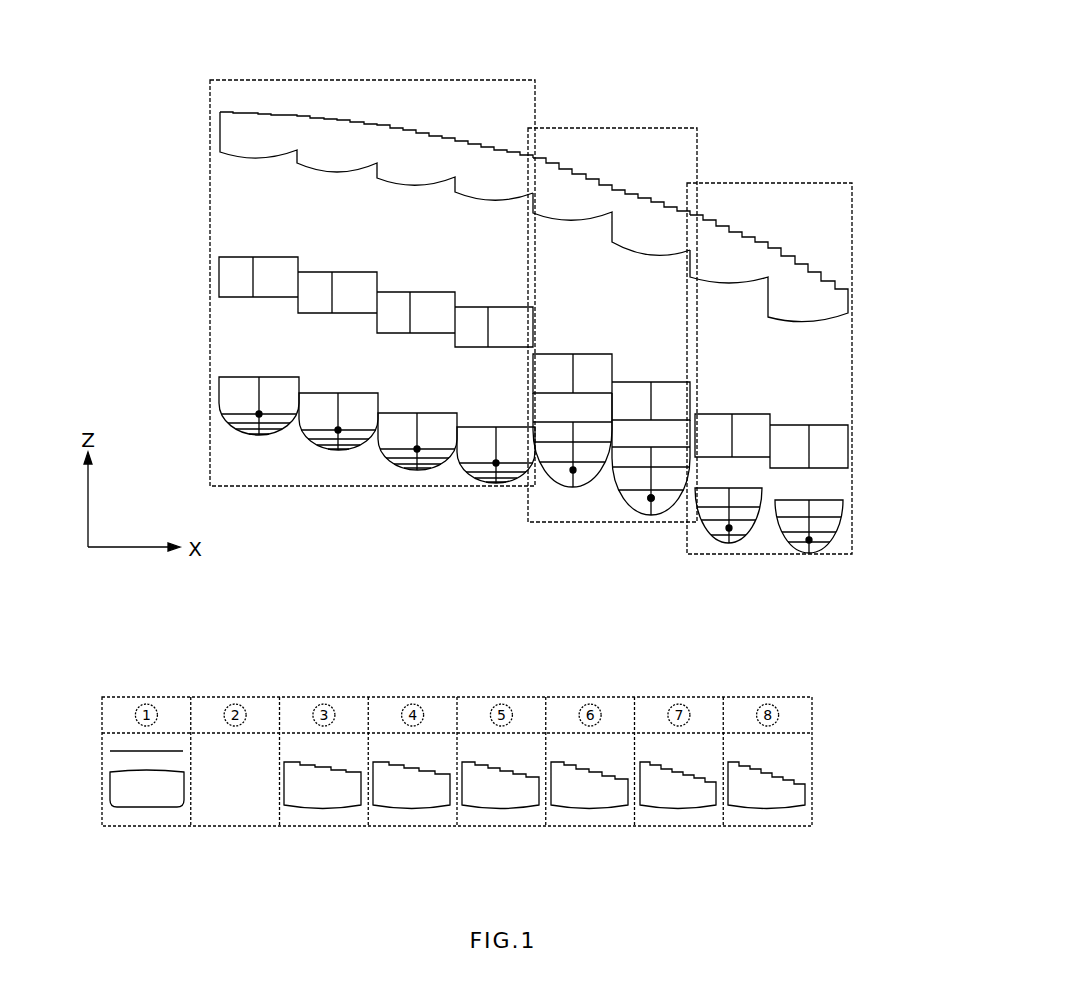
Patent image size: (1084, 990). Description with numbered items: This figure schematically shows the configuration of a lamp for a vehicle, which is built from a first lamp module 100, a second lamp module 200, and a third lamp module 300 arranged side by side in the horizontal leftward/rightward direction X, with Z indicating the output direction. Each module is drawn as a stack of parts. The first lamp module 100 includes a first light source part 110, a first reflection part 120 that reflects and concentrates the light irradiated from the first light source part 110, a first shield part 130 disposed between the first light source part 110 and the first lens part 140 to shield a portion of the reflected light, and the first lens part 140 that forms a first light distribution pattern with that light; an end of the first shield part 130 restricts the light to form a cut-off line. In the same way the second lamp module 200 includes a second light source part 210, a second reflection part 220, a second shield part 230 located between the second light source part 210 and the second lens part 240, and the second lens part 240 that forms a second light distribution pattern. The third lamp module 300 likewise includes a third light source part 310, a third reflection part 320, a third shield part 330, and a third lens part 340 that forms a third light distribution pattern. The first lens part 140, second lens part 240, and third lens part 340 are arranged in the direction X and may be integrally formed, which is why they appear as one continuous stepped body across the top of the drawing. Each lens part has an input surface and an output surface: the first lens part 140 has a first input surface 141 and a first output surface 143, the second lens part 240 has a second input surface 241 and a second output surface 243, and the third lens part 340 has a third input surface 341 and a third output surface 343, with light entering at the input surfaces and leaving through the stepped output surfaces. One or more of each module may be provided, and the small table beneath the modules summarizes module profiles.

The first lamp module 100 is at (765, 183).
The first light source part 110 is at (809, 555).
The first reflection part 120 is at (790, 540).
The first shield part 130 is at (826, 445).
The first lens part 140 is at (805, 253).
The first input surface 141 is at (820, 320).
The first output surface 143 is at (832, 272).
The second lamp module 200 is at (610, 128).
The second light source part 210 is at (653, 517).
The second reflection part 220 is at (633, 498).
The second shield part 230 is at (672, 393).
The second lens part 240 is at (635, 184).
The second input surface 241 is at (653, 250).
The second output surface 243 is at (657, 190).
The third lamp module 300 is at (512, 80).
The third light source part 310 is at (222, 415).
The third reflection part 320 is at (492, 466).
The third shield part 330 is at (355, 285).
The third lens part 340 is at (338, 108).
The third input surface 341 is at (250, 156).
The third output surface 343 is at (222, 113).